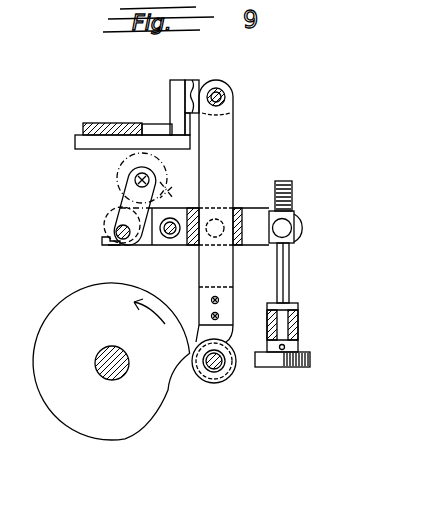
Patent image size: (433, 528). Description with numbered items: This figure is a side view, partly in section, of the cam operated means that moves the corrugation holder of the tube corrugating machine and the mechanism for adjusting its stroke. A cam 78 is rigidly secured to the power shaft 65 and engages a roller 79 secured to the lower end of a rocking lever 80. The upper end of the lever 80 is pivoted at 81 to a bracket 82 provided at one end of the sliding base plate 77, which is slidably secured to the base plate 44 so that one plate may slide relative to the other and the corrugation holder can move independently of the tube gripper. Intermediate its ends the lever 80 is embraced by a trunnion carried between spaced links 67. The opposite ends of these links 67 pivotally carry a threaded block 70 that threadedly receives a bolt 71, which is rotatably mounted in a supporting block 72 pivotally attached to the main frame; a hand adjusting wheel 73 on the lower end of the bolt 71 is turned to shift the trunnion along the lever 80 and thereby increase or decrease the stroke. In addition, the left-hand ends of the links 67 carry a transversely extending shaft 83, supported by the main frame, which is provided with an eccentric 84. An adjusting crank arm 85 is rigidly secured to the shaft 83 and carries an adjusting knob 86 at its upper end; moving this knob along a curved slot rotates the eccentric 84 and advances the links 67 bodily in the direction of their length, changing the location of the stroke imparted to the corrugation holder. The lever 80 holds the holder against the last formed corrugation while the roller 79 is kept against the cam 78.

The base plate 44 is at (100, 122).
The sliding base plate 77 is at (75, 141).
The bracket 82 is at (171, 84).
The pivot 81 is at (227, 90).
The rocking lever 80 is at (234, 147).
The adjusting knob 86 is at (150, 179).
The adjusting crank arm 85 is at (130, 198).
The eccentric 84 is at (110, 217).
The transversely extending shaft 83 is at (114, 232).
The links 67 is at (259, 247).
The threaded block 70 is at (295, 223).
The threaded bolt 71 is at (292, 277).
The supporting block 72 is at (299, 323).
The hand adjusting wheel 73 is at (311, 360).
The cam 78 is at (63, 314).
The power shaft 65 is at (115, 378).
The roller 79 is at (207, 384).